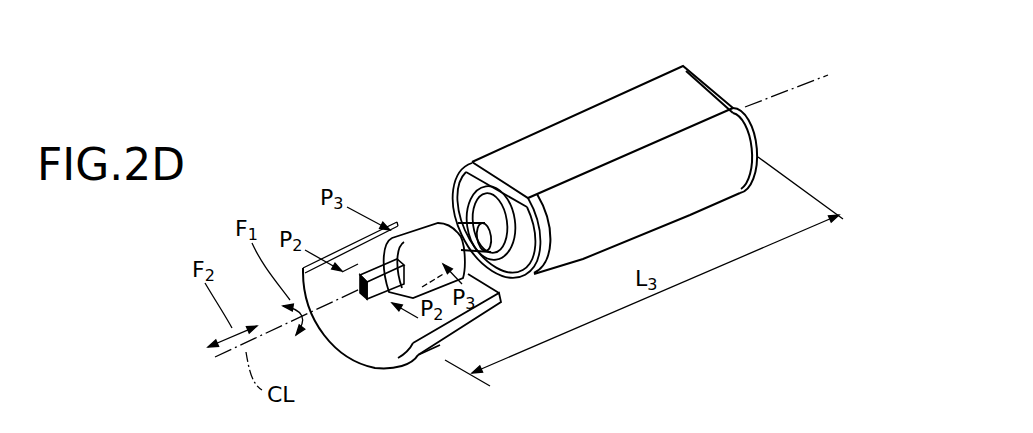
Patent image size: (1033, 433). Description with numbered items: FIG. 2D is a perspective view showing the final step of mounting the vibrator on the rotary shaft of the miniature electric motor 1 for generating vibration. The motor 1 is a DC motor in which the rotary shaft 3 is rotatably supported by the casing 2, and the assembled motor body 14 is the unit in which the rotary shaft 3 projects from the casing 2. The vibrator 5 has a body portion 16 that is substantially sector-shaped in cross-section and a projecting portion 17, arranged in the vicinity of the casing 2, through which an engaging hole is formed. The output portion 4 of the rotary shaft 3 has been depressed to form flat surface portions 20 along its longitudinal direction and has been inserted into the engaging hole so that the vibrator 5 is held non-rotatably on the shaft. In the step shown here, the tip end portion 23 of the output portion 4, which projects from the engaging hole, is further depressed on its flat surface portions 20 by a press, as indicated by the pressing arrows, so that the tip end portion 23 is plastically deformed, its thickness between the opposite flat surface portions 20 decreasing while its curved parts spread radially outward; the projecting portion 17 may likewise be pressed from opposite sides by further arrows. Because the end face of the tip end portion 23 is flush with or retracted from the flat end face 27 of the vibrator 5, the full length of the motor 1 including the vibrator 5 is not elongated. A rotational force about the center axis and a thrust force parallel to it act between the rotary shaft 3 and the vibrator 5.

The miniature electric motor for generating vibration 1 is at (712, 68).
The casing 2 is at (581, 111).
The rotary shaft 3 is at (464, 216).
The output portion 4 is at (364, 240).
The vibrator 5 is at (319, 256).
The motor body 14 is at (501, 142).
The body portion 16 is at (398, 358).
The projecting portion 17 is at (419, 232).
The flat surface portion 20 is at (377, 299).
The tip end portion 23 is at (361, 270).
The flat end face 27 is at (352, 335).